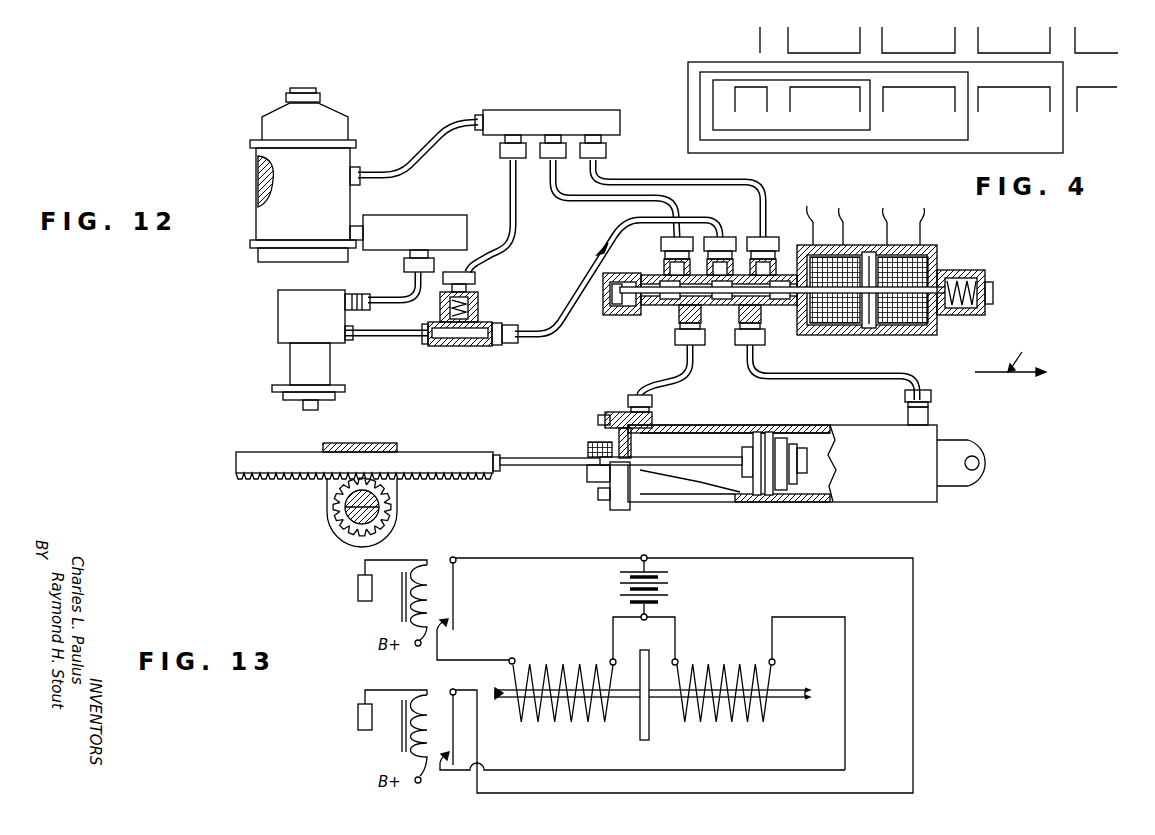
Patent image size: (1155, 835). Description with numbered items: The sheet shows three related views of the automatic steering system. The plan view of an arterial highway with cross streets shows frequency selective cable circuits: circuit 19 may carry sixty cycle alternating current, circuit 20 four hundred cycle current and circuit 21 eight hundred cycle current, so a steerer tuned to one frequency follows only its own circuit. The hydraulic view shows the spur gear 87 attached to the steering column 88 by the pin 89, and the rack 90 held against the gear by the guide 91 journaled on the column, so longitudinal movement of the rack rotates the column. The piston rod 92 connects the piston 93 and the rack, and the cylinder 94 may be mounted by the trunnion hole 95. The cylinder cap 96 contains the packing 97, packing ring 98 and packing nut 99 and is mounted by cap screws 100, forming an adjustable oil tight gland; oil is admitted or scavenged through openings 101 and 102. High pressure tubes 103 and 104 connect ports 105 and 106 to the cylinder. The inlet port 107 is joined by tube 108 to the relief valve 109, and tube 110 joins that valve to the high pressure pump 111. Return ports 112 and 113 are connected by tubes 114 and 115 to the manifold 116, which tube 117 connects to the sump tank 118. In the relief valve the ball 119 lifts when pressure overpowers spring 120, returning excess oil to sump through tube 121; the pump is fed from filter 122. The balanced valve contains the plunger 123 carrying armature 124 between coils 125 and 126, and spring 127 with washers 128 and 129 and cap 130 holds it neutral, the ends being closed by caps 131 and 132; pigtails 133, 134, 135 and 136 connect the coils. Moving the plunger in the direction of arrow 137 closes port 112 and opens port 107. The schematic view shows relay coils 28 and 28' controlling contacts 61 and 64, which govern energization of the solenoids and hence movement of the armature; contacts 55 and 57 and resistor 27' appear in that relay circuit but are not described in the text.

In FIG. 4, the circuit 19 is at (696, 61).
In FIG. 4, the circuit 20 is at (733, 72).
In FIG. 4, the circuit 21 is at (816, 81).
In FIG. 13, the resistor 27' is at (375, 713).
In FIG. 13, the relay coil 28 is at (403, 584).
In FIG. 13, the relay coil 28' is at (387, 735).
In FIG. 13, the contact 55 is at (458, 606).
In FIG. 13, the contact 57 is at (458, 736).
In FIG. 13, the contact 61 is at (447, 634).
In FIG. 13, the contact 64 is at (447, 768).
In FIG. 12, the spur gear 87 is at (338, 517).
In FIG. 12, the steering column 88 is at (355, 527).
In FIG. 12, the pin 89 is at (393, 509).
In FIG. 12, the rack 90 is at (278, 488).
In FIG. 12, the guide 91 is at (362, 446).
In FIG. 12, the piston rod 92 is at (524, 466).
In FIG. 12, the piston 93 is at (776, 440).
In FIG. 12, the cylinder 94 is at (848, 494).
In FIG. 12, the trunnion hole 95 is at (971, 474).
In FIG. 12, the cylinder cap 96 is at (614, 411).
In FIG. 12, the packing 97 is at (592, 442).
In FIG. 12, the packing ring 98 is at (576, 456).
In FIG. 12, the packing nut 99 is at (594, 478).
In FIG. 12, the cap screws 100 is at (600, 418).
In FIG. 12, the opening 101 is at (655, 412).
In FIG. 12, the opening 102 is at (930, 402).
In FIG. 12, the high pressure tube 103 is at (660, 378).
In FIG. 12, the high pressure tube 104 is at (768, 372).
In FIG. 12, the port 105 is at (665, 308).
In FIG. 12, the port 106 is at (740, 350).
In FIG. 12, the inlet port 107 is at (700, 290).
In FIG. 12, the tube 108 is at (590, 250).
In FIG. 12, the relief valve 109 is at (462, 348).
In FIG. 12, the tube 110 is at (413, 340).
In FIG. 12, the high pressure pump 111 is at (278, 318).
In FIG. 12, the return port 112 is at (366, 292).
In FIG. 12, the return port 113 is at (735, 258).
In FIG. 12, the tube 114 is at (558, 203).
In FIG. 12, the tube 115 is at (632, 180).
In FIG. 12, the manifold 116 is at (515, 116).
In FIG. 12, the tube 117 is at (426, 148).
In FIG. 12, the sump tank 118 is at (352, 228).
In FIG. 12, the ball 119 is at (479, 306).
In FIG. 12, the spring 120 is at (470, 290).
In FIG. 12, the tube 121 is at (500, 258).
In FIG. 12, the filter 122 is at (417, 223).
In FIG. 12, the plunger 123 is at (623, 318).
In FIG. 12, the armature 124 is at (868, 245).
In FIG. 13, the armature 124 is at (650, 735).
In FIG. 12, the coil 125 is at (832, 335).
In FIG. 13, the coil 125 is at (553, 668).
In FIG. 12, the coil 126 is at (903, 335).
In FIG. 13, the coil 126 is at (724, 681).
In FIG. 12, the spring 127 is at (962, 272).
In FIG. 12, the washer 128 is at (950, 276).
In FIG. 12, the washer 129 is at (982, 284).
In FIG. 12, the cap 130 is at (990, 298).
In FIG. 12, the cap 131 is at (606, 298).
In FIG. 12, the cap 132 is at (956, 313).
In FIG. 12, the pigtail 133 is at (810, 210).
In FIG. 12, the pigtail 134 is at (840, 219).
In FIG. 12, the pigtail 135 is at (894, 219).
In FIG. 12, the pigtail 136 is at (931, 219).
In FIG. 12, the arrow 137 is at (1020, 352).